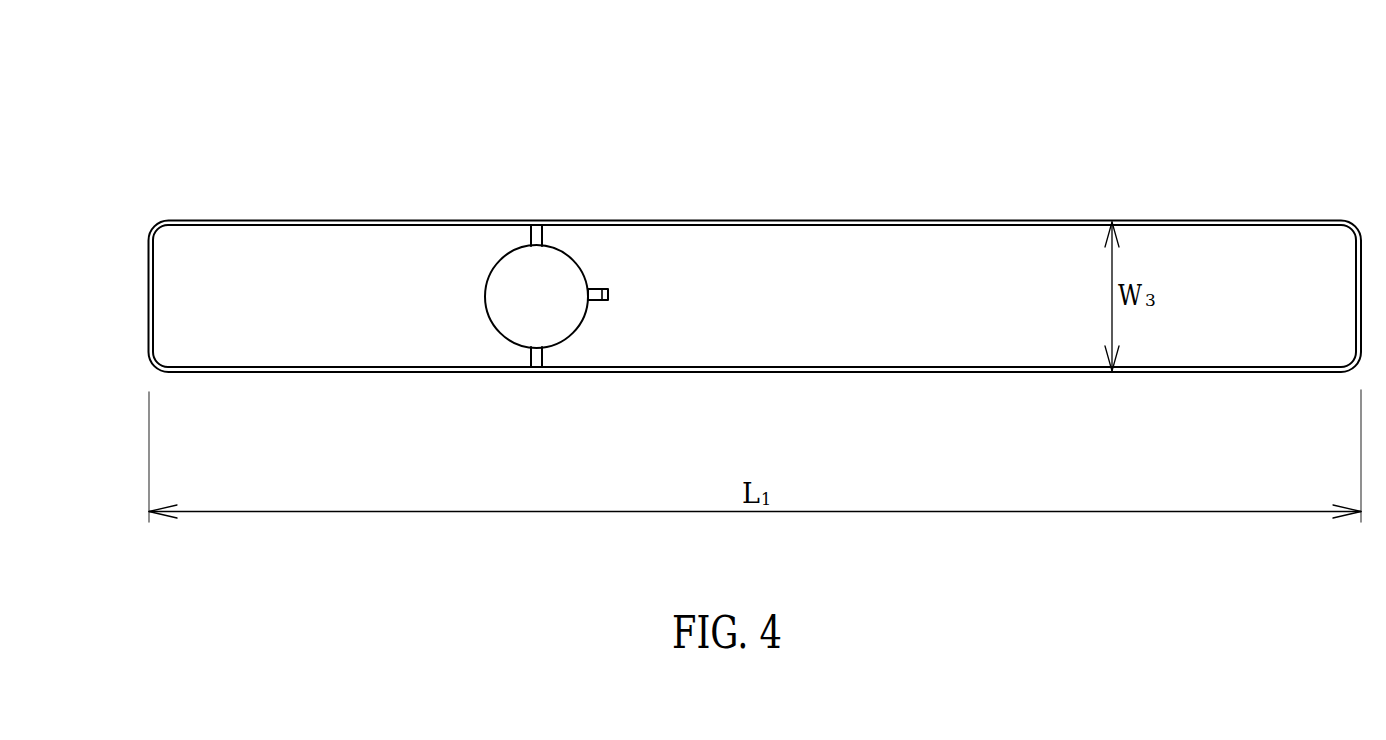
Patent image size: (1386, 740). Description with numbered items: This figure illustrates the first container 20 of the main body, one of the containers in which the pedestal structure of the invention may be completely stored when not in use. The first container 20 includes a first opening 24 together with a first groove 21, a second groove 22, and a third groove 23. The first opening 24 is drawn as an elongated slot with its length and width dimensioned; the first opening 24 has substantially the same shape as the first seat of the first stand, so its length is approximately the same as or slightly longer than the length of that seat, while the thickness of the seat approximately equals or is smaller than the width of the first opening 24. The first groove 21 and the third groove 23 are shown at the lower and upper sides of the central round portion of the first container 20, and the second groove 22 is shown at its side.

The first container 20 is at (755, 254).
The first groove 21 is at (537, 366).
The second groove 22 is at (598, 292).
The third groove 23 is at (537, 229).
The first opening 24 is at (350, 260).